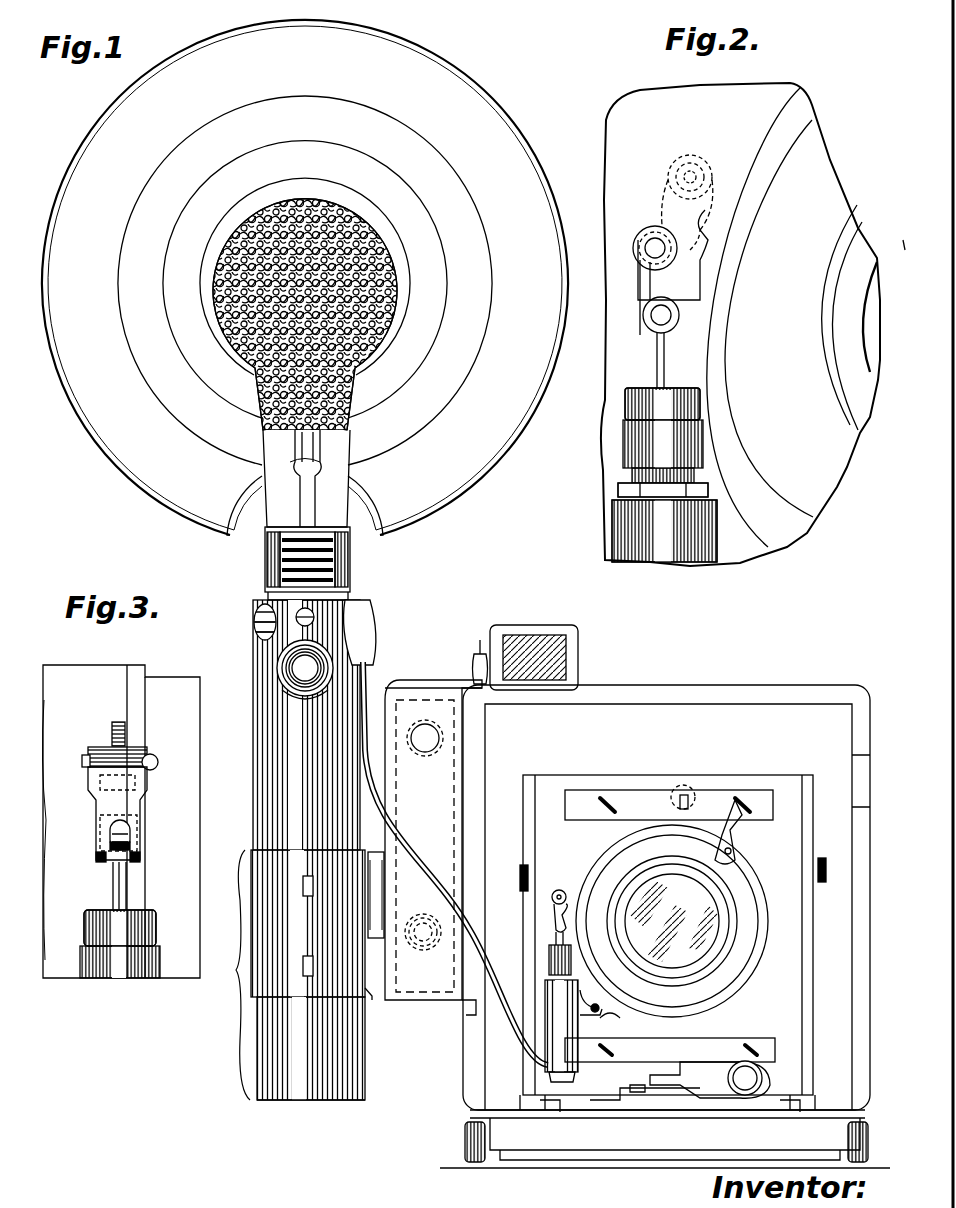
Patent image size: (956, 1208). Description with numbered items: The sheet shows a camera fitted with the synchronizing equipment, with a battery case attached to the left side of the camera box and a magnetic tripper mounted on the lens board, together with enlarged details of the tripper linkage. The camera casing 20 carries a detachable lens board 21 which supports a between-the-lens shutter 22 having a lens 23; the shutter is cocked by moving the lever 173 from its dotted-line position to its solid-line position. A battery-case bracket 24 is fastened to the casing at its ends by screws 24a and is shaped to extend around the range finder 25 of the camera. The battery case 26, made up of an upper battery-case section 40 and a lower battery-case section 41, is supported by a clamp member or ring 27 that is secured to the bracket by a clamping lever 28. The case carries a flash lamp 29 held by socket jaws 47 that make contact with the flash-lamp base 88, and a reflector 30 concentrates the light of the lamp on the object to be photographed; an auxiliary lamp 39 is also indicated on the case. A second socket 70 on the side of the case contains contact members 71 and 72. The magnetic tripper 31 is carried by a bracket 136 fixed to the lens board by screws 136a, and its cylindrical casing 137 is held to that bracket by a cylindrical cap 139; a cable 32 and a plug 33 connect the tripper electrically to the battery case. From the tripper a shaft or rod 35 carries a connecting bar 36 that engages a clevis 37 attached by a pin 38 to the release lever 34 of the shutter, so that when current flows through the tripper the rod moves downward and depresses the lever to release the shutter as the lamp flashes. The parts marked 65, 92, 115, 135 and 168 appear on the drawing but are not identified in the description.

In FIG. 1, the camera casing 20 is at (690, 685).
In FIG. 1, the lens board 21 is at (776, 843).
In FIG. 2, the lens board 21 is at (640, 110).
In FIG. 1, the between-the-lens shutter 22 is at (738, 878).
In FIG. 2, the between-the-lens shutter 22 is at (830, 165).
In FIG. 3, the between-the-lens shutter 22 is at (115, 676).
In FIG. 1, the lens 23 is at (700, 940).
In FIG. 1, the battery-case bracket 24 is at (440, 680).
In FIG. 1, the screws 24a is at (455, 1040).
In FIG. 1, the range finder 25 is at (423, 952).
In FIG. 1, the battery case 26 is at (285, 975).
In FIG. 1, the clamp member or ring 27 is at (368, 1000).
In FIG. 1, the clamping lever 28 is at (384, 892).
In FIG. 1, the flash lamp 29 is at (390, 295).
In FIG. 1, the reflector 30 is at (425, 505).
In FIG. 1, the magnetic tripper 31 is at (535, 980).
In FIG. 2, the magnetic tripper 31 is at (603, 500).
In FIG. 3, the magnetic tripper 31 is at (76, 915).
In FIG. 1, the cable 32 is at (370, 690).
In FIG. 1, the plug 33 is at (362, 622).
In FIG. 1, the release lever 34 is at (572, 880).
In FIG. 2, the release lever 34 is at (700, 248).
In FIG. 3, the release lever 34 is at (112, 738).
In FIG. 2, the shaft or rod 35 is at (655, 360).
In FIG. 3, the shaft or rod 35 is at (113, 885).
In FIG. 2, the connecting bar 36 is at (710, 160).
In FIG. 3, the connecting bar 36 is at (130, 840).
In FIG. 2, the clevis 37 is at (636, 305).
In FIG. 3, the clevis 37 is at (126, 810).
In FIG. 2, the pin 38 is at (640, 230).
In FIG. 3, the pin 38 is at (152, 752).
In FIG. 1, the auxiliary lamp 39 is at (305, 681).
In FIG. 1, the upper battery-case section 40 is at (262, 760).
In FIG. 1, the lower battery-case section 41 is at (367, 1078).
In FIG. 1, the socket jaws 47 is at (267, 548).
In FIG. 1, the screw 65 is at (314, 612).
In FIG. 1, the second socket 70 is at (254, 624).
In FIG. 1, the contact member 71 is at (256, 614).
In FIG. 1, the contact member 72 is at (258, 634).
In FIG. 1, the flash-lamp base 88 is at (335, 566).
In FIG. 1, the battery case window 92 is at (300, 926).
In FIG. 1, the knob ring 115 is at (290, 672).
In FIG. 1, the knob flange 135 is at (283, 660).
In FIG. 1, the bracket 136 is at (598, 1022).
In FIG. 1, the screws 136a is at (631, 1024).
In FIG. 2, the cylindrical casing 137 is at (685, 562).
In FIG. 2, the cylindrical cap 139 is at (708, 490).
In FIG. 2, the solenoid cap 168 is at (690, 408).
In FIG. 3, the solenoid cap 168 is at (156, 928).
In FIG. 1, the lever 173 is at (685, 780).